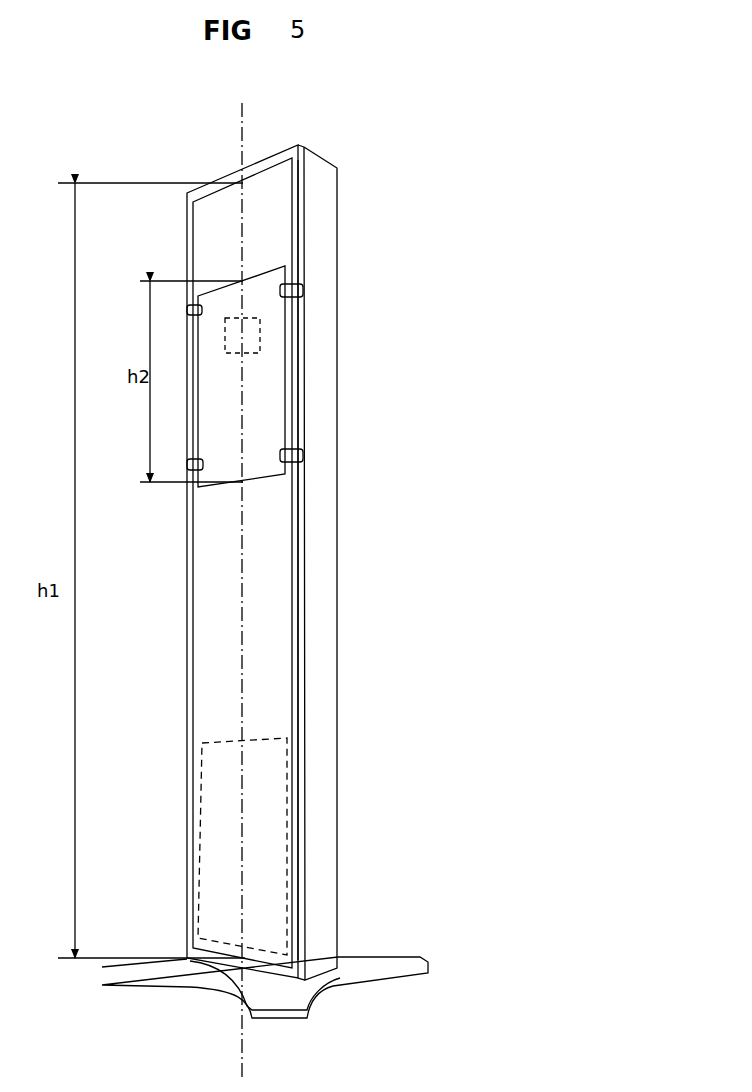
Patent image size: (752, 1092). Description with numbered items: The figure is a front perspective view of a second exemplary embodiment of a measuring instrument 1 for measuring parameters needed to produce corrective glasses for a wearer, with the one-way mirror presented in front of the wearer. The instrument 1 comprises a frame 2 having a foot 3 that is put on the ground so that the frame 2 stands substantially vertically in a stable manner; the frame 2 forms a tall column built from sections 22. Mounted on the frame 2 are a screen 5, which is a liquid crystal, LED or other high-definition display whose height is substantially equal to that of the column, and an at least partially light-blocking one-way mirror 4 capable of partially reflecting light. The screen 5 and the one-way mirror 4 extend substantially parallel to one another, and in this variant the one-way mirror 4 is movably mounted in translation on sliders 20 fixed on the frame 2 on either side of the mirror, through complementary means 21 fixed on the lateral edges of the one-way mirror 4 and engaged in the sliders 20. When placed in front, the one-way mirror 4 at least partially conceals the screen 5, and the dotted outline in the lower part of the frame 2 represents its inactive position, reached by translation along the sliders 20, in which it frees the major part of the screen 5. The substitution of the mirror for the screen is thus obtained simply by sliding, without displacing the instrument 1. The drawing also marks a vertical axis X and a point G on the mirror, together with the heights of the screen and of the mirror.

The measuring instrument 1 is at (411, 296).
The frame 2 is at (256, 562).
The foot 3 is at (278, 1004).
The one-way mirror 4 is at (273, 388).
The screen 5 is at (226, 653).
The sliders 20 is at (186, 218).
The complementary means 21 is at (304, 289).
The sections of the frame 22 is at (325, 473).
The centre of gravity G is at (242, 335).
The vertical axis X is at (243, 123).